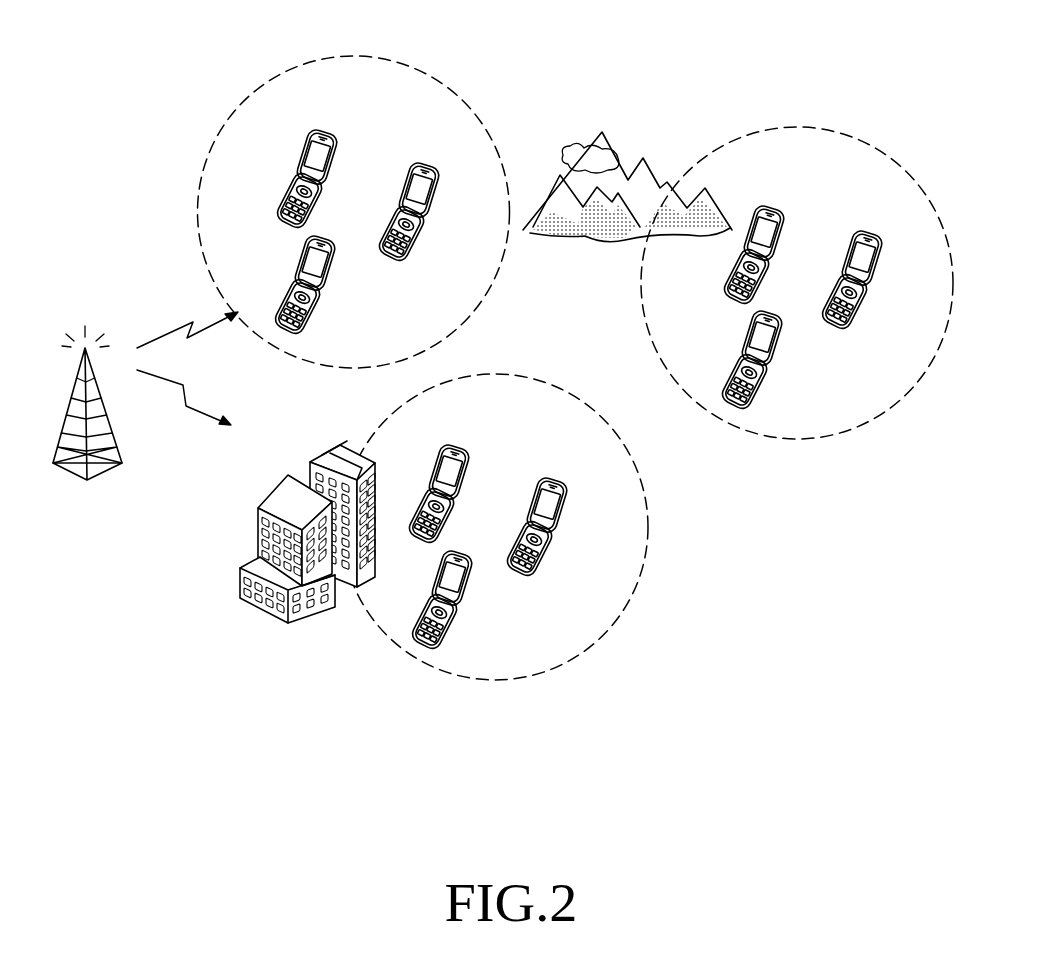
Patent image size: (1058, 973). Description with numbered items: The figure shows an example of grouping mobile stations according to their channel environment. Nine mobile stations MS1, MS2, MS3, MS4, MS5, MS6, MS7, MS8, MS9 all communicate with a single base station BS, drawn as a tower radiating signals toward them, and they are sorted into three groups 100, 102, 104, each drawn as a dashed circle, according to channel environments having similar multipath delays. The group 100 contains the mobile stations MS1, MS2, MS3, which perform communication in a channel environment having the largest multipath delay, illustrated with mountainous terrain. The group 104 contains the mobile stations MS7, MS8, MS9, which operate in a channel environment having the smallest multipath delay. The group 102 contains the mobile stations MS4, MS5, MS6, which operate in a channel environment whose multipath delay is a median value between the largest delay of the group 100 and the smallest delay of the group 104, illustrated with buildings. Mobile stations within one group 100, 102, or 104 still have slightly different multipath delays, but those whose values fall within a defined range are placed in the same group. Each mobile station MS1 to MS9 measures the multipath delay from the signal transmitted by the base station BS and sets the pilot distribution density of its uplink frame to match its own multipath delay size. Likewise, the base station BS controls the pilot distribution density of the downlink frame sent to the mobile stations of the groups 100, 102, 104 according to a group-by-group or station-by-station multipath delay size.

The group 100 is at (795, 127).
The group 102 is at (645, 522).
The group 104 is at (350, 55).
The base station BS is at (105, 409).
The mobile station MS1 is at (867, 238).
The mobile station MS2 is at (770, 206).
The mobile station MS3 is at (776, 382).
The mobile station MS4 is at (555, 478).
The mobile station MS5 is at (457, 445).
The mobile station MS6 is at (460, 620).
The mobile station MS7 is at (425, 164).
The mobile station MS8 is at (325, 131).
The mobile station MS9 is at (327, 307).